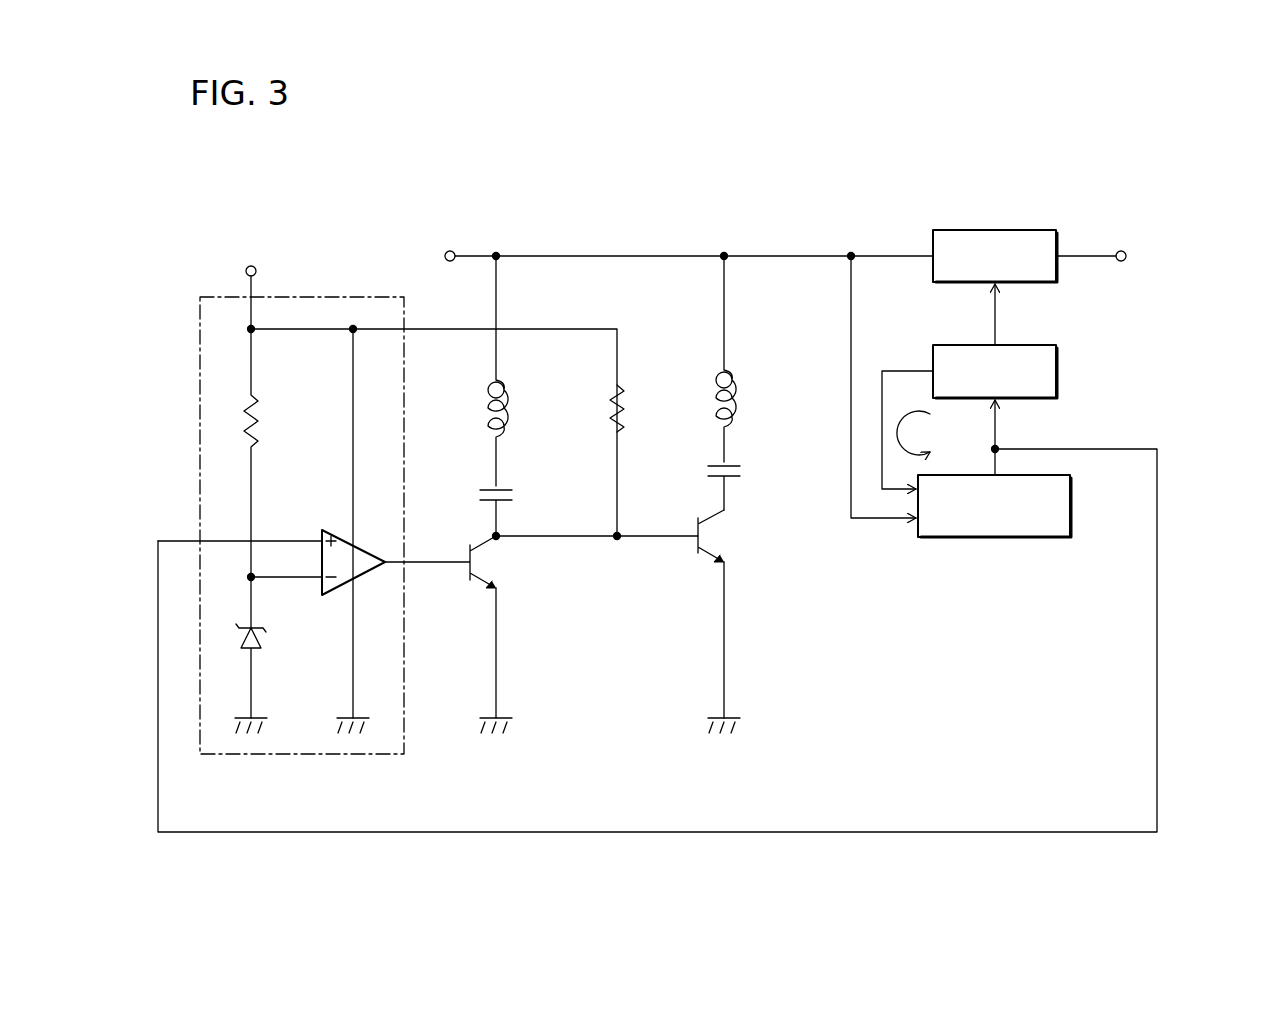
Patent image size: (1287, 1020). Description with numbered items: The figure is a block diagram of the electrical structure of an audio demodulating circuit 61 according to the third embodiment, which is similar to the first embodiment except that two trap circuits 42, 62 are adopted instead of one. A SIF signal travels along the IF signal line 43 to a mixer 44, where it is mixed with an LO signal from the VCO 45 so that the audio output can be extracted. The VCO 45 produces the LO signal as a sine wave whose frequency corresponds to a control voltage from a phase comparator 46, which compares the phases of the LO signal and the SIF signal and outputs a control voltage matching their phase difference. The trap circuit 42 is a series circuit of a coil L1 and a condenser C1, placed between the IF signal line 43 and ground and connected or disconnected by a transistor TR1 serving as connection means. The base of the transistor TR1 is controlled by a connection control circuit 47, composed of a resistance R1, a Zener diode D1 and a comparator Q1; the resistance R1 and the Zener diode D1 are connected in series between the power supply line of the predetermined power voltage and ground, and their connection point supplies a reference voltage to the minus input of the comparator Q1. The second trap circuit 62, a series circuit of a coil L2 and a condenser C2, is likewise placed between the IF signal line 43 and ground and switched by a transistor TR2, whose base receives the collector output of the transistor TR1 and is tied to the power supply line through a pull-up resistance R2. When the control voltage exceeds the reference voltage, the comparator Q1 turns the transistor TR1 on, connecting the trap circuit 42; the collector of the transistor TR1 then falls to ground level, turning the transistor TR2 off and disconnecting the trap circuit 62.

The audio demodulating circuit 61 is at (226, 186).
The trap circuit 42 is at (552, 400).
The IF signal line 43 is at (548, 254).
The mixer 44 is at (995, 229).
The VCO 45 is at (1058, 373).
The phase comparator 46 is at (995, 540).
The connection control circuit 47 is at (322, 756).
The trap circuit 62 is at (778, 402).
The resistance R1 is at (256, 416).
The pull-up resistance R2 is at (622, 396).
The Zener diode D1 is at (262, 640).
The comparator Q1 is at (330, 528).
The transistor TR1 is at (484, 542).
The transistor TR2 is at (712, 518).
The coil L1 is at (504, 430).
The condenser C1 is at (508, 490).
The coil L2 is at (732, 400).
The condenser C2 is at (736, 466).